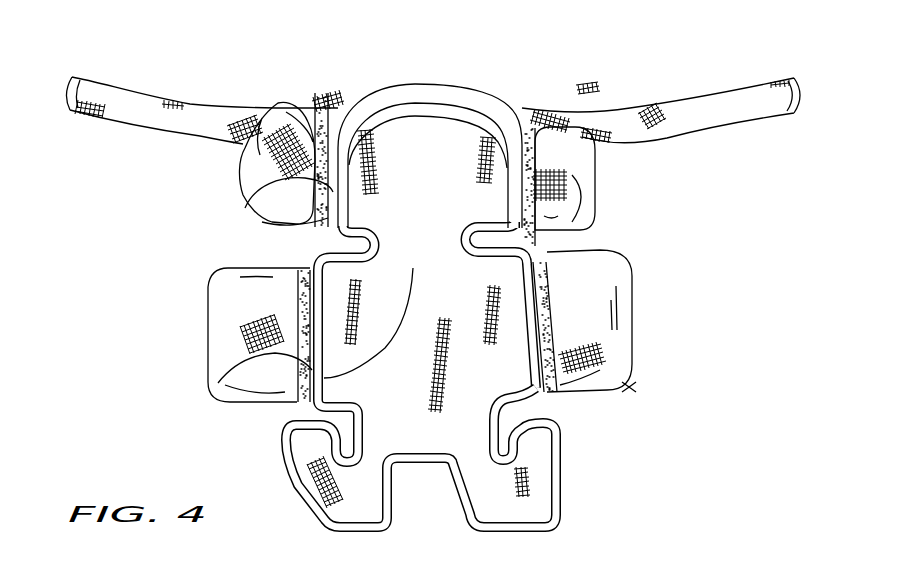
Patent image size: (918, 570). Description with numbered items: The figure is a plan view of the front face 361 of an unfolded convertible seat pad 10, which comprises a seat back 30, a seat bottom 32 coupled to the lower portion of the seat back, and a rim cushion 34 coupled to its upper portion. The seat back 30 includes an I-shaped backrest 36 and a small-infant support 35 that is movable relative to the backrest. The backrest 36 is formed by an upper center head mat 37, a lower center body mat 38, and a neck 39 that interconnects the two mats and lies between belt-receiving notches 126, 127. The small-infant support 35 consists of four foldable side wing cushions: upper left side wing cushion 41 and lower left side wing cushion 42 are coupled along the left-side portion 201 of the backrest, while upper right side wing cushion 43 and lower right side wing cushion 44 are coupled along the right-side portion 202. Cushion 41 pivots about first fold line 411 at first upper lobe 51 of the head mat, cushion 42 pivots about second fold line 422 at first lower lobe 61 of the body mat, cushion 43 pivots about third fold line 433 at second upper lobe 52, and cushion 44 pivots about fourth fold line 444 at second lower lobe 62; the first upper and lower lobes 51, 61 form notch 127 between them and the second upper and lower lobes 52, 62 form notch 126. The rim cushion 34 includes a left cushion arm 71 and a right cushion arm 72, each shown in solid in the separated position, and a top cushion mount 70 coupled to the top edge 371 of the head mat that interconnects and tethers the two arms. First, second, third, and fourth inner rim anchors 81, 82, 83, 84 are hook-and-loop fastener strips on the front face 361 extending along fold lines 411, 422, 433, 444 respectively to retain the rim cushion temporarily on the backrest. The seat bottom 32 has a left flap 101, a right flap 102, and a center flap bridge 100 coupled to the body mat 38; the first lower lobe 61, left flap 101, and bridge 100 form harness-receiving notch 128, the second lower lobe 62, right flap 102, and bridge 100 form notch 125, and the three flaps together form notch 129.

The convertible seat pad 10 is at (600, 93).
The seat back 30 is at (527, 228).
The seat bottom 32 is at (493, 474).
The rim cushion 34 is at (730, 80).
The small-infant support 35 is at (562, 297).
The backrest 36 is at (422, 126).
The upper center head mat 37 is at (403, 193).
The lower center body mat 38 is at (400, 297).
The neck 39 is at (407, 242).
The upper left side wing cushion 41 is at (283, 107).
The lower left side wing cushion 42 is at (211, 356).
The upper right side wing cushion 43 is at (596, 204).
The lower right side wing cushion 44 is at (624, 384).
The first upper lobe 51 is at (348, 204).
The second upper lobe 52 is at (500, 216).
The first lower lobe 61 is at (344, 335).
The second lower lobe 62 is at (543, 318).
The top cushion mount 70 is at (460, 88).
The left cushion arm 71 is at (123, 93).
The right cushion arm 72 is at (673, 107).
The first inner rim anchor 81 is at (323, 150).
The second inner rim anchor 82 is at (290, 383).
The third inner rim anchor 83 is at (522, 150).
The fourth inner rim anchor 84 is at (517, 330).
The center flap bridge 100 is at (403, 438).
The left flap 101 is at (305, 462).
The right flap 102 is at (540, 448).
The harness-receiving notch 125 is at (530, 404).
The belt-receiving notch 126 is at (495, 258).
The belt-receiving notch 127 is at (368, 228).
The harness-receiving notch 128 is at (337, 435).
The harness-receiving notch 129 is at (460, 490).
The left-side portion 201 is at (296, 288).
The right-side portion 202 is at (543, 272).
The front face 361 is at (503, 503).
The top edge 371 is at (392, 108).
The first fold line 411 is at (340, 157).
The second fold line 422 is at (311, 372).
The third fold line 433 is at (520, 161).
The fourth fold line 444 is at (533, 381).